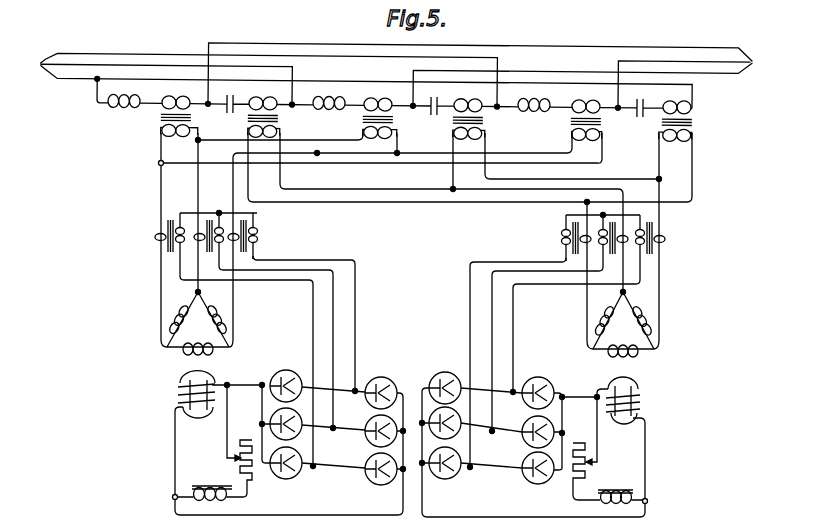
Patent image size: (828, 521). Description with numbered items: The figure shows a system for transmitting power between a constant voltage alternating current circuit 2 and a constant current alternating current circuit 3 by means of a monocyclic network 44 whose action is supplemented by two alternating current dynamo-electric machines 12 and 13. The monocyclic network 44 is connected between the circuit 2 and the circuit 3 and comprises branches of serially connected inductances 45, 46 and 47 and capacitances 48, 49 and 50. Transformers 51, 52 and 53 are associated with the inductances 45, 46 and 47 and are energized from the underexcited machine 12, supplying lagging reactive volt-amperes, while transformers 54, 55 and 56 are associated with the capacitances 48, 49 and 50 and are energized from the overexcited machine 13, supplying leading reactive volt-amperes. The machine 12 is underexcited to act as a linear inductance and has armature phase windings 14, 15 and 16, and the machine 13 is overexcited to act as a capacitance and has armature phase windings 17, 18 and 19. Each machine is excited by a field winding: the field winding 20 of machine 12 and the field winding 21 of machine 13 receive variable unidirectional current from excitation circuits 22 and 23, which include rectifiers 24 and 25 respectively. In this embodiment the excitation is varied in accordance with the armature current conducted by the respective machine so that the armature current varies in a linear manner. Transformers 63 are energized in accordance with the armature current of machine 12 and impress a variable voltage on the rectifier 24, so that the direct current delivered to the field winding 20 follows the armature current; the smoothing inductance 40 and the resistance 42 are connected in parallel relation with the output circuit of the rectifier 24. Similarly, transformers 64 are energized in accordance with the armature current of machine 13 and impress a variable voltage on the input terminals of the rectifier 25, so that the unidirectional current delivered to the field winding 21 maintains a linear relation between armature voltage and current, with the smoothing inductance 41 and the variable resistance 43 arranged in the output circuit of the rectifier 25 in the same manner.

The constant voltage alternating current circuit 2 is at (360, 80).
The constant current alternating current circuit 3 is at (486, 76).
The alternating current dynamo-electric machine 12 is at (193, 352).
The alternating current dynamo-electric machine 13 is at (631, 356).
The armature phase winding 14 is at (216, 309).
The armature phase winding 15 is at (198, 337).
The armature phase winding 16 is at (182, 309).
The armature phase winding 17 is at (641, 310).
The armature phase winding 18 is at (623, 341).
The armature phase winding 19 is at (609, 311).
The field winding 20 is at (178, 396).
The field winding 21 is at (640, 396).
The excitation circuit 22 is at (289, 449).
The excitation circuit 23 is at (534, 452).
The rectifier 24 is at (335, 455).
The rectifier 25 is at (486, 454).
The smoothing inductance 40 is at (229, 501).
The smoothing inductance 41 is at (598, 503).
The variable resistance 42 is at (253, 474).
The variable resistance 43 is at (587, 473).
The monocyclic network 44 is at (366, 72).
The inductance 45 is at (129, 105).
The inductance 46 is at (338, 114).
The inductance 47 is at (545, 115).
The capacitance 48 is at (234, 114).
The capacitance 49 is at (439, 116).
The capacitance 50 is at (647, 119).
The transformer 51 is at (161, 121).
The transformer 52 is at (396, 117).
The transformer 53 is at (603, 118).
The transformer 54 is at (282, 116).
The transformer 55 is at (487, 118).
The transformer 56 is at (694, 115).
The transformers 63 is at (178, 212).
The transformers 64 is at (566, 219).